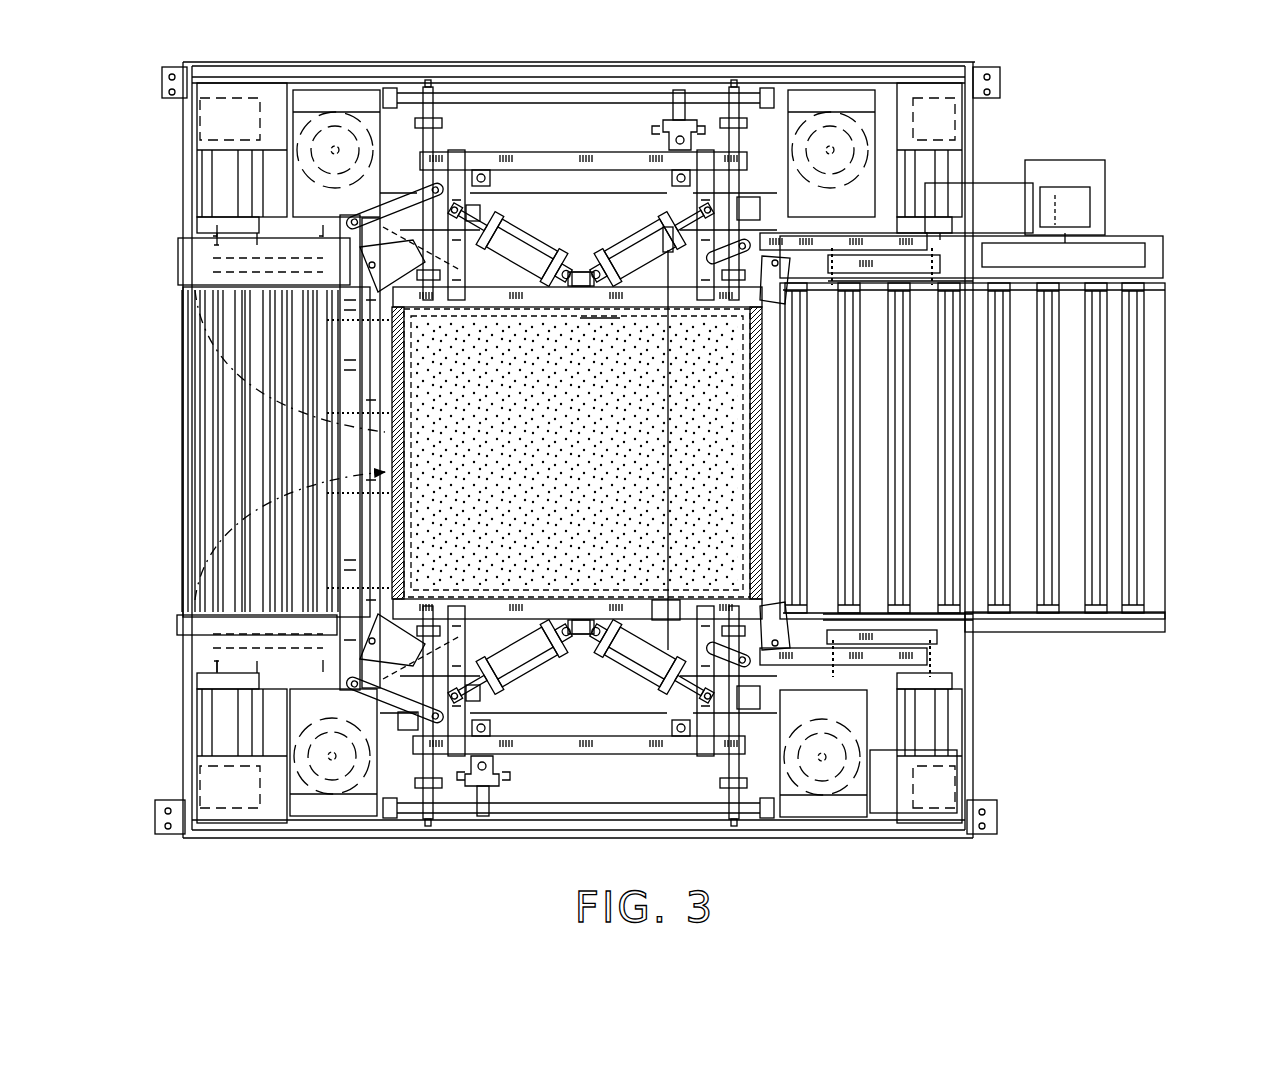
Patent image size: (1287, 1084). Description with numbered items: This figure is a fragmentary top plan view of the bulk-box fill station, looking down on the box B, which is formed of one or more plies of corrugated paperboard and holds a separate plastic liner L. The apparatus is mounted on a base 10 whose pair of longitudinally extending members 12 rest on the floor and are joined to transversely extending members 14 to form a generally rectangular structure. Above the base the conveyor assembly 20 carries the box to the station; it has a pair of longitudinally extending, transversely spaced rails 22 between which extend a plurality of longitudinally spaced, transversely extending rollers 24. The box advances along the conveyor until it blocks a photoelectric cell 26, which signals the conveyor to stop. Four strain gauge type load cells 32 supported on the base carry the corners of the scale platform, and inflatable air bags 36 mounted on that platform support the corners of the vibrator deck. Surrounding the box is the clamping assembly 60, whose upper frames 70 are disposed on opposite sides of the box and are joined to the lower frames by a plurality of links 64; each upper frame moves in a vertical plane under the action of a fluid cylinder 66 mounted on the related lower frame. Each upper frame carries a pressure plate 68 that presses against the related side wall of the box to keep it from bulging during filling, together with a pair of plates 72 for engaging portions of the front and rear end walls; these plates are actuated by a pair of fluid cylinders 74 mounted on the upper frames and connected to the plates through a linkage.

The base 10 is at (518, 842).
The longitudinally extending members 12 is at (183, 58).
The transversely extending members 14 is at (190, 540).
The conveyor assembly 20 is at (1165, 428).
The rails 22 is at (178, 264).
The rollers 24 is at (235, 465).
The photoelectric cell 26 is at (668, 258).
The load cells 32 is at (197, 155).
The inflatable air bags 36 is at (335, 112).
The clamping assembly 60 is at (575, 205).
The links 64 is at (430, 100).
The fluid cylinder 66 is at (672, 128).
The pressure plate 68 is at (557, 312).
The upper frames 70 is at (704, 148).
The plates 72 is at (398, 375).
The fluid cylinders 74 is at (510, 225).
The box B is at (528, 322).
The plastic liner L is at (598, 322).